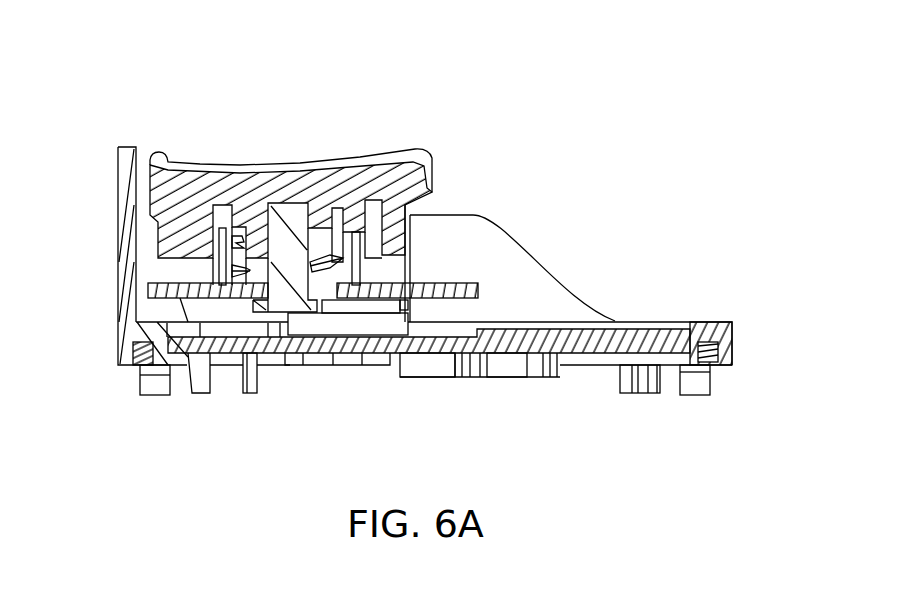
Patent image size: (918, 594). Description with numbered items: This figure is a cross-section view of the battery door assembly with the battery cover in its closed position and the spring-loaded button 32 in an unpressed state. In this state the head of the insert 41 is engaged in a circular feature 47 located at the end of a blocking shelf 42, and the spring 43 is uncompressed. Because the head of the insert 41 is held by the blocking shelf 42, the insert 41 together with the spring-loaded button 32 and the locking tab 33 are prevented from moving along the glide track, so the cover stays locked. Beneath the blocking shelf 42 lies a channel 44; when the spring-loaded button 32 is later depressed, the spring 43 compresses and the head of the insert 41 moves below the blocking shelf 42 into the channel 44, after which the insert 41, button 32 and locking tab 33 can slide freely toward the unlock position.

The spring-loaded button 32 is at (222, 160).
The locking tab 33 is at (220, 253).
The insert 41 is at (293, 215).
The blocking shelf 42 is at (365, 307).
The spring 43 is at (239, 228).
The channel 44 is at (342, 323).
The circular feature 47 is at (403, 307).